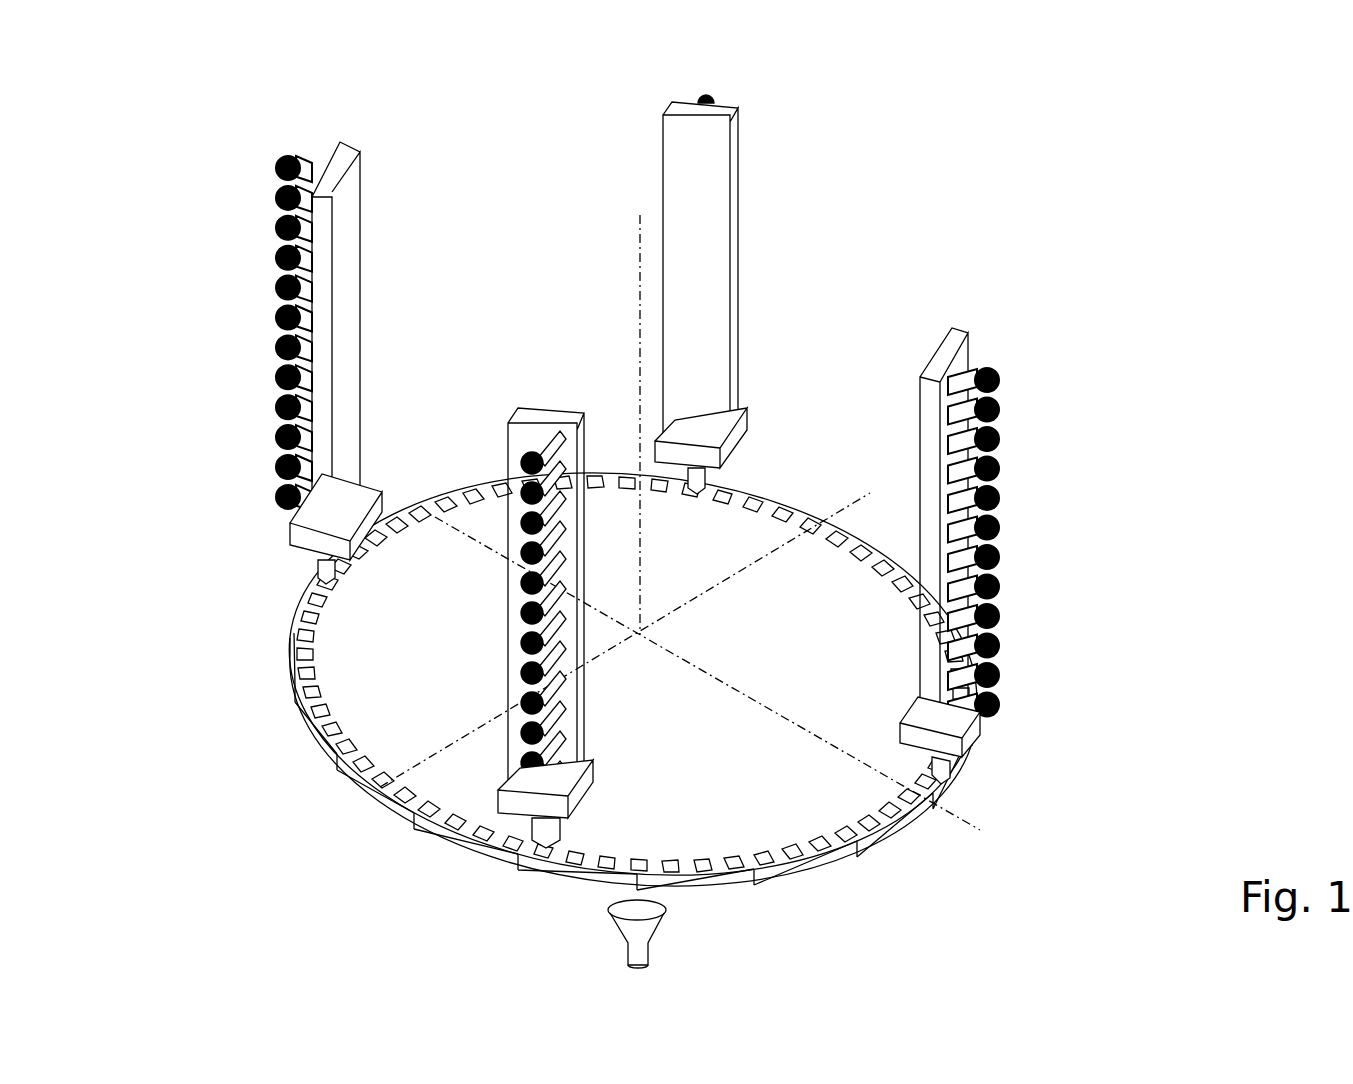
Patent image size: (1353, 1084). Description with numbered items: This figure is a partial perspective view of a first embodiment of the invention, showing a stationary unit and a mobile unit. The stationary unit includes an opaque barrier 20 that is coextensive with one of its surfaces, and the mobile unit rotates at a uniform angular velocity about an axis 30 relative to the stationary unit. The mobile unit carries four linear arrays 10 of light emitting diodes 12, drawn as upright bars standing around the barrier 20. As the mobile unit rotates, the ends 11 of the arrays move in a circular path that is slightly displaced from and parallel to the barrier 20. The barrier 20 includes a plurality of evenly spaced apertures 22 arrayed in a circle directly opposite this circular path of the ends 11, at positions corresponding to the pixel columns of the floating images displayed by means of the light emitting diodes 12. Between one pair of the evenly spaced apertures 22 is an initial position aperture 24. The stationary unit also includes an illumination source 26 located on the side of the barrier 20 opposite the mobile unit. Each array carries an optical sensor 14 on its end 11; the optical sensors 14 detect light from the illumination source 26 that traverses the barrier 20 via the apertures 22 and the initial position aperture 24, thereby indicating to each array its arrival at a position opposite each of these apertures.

The linear array 10 is at (341, 170).
The end 11 is at (380, 490).
The light emitting diode 12 is at (276, 260).
The optical sensor 14 is at (312, 557).
The opaque barrier 20 is at (696, 609).
The aperture 22 is at (346, 770).
The initial position aperture 24 is at (300, 672).
The illumination source 26 is at (660, 922).
The axis 30 is at (638, 272).